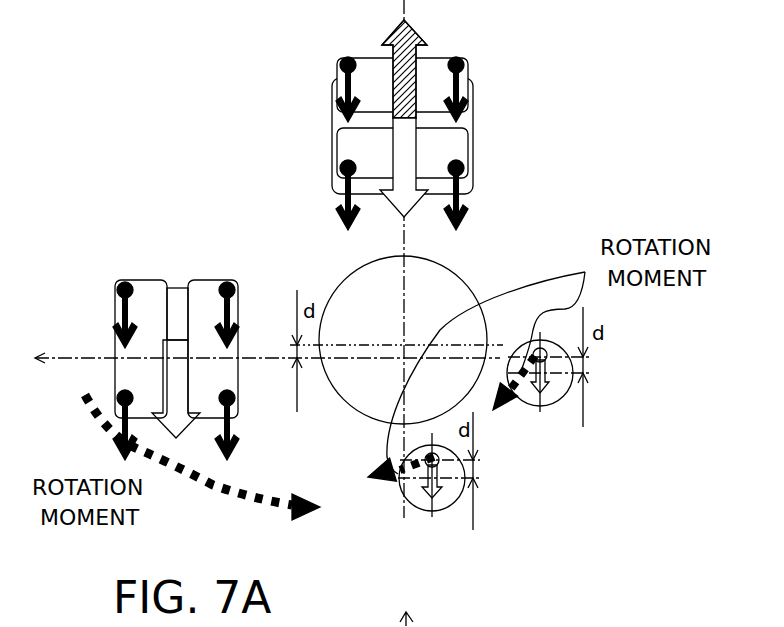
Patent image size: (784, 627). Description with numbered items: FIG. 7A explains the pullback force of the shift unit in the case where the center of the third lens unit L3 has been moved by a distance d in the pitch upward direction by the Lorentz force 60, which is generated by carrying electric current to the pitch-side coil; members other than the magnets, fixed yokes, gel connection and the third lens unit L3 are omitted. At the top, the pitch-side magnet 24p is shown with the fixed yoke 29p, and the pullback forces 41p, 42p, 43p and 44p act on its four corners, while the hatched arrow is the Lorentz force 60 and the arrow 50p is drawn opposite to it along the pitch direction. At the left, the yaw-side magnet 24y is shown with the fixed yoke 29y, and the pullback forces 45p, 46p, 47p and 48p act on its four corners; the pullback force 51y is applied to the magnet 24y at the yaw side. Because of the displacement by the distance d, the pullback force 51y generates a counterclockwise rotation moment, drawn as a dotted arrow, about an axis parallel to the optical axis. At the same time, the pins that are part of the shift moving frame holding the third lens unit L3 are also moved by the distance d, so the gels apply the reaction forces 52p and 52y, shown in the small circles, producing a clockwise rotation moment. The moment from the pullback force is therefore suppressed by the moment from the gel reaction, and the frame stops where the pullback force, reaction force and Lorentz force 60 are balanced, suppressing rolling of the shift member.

The Lorentz force 60 is at (413, 75).
The pullback force 41p is at (333, 83).
The pullback force 42p is at (467, 82).
The pullback force 43p is at (340, 197).
The pullback force 44p is at (467, 193).
The magnet 24p is at (358, 142).
The fixed yoke 29p is at (437, 123).
The arrow (force direction) 50p is at (403, 183).
The pullback force 51y is at (175, 352).
The fixed yoke 29y is at (173, 320).
The pullback force 48p is at (227, 308).
The pullback force 46p is at (120, 308).
The pullback force 45p is at (120, 421).
The pullback force 47p is at (230, 420).
The magnet 24y is at (153, 407).
The reaction force 52y is at (543, 389).
The reaction force 52p is at (432, 490).
The third lens unit L3 is at (443, 400).